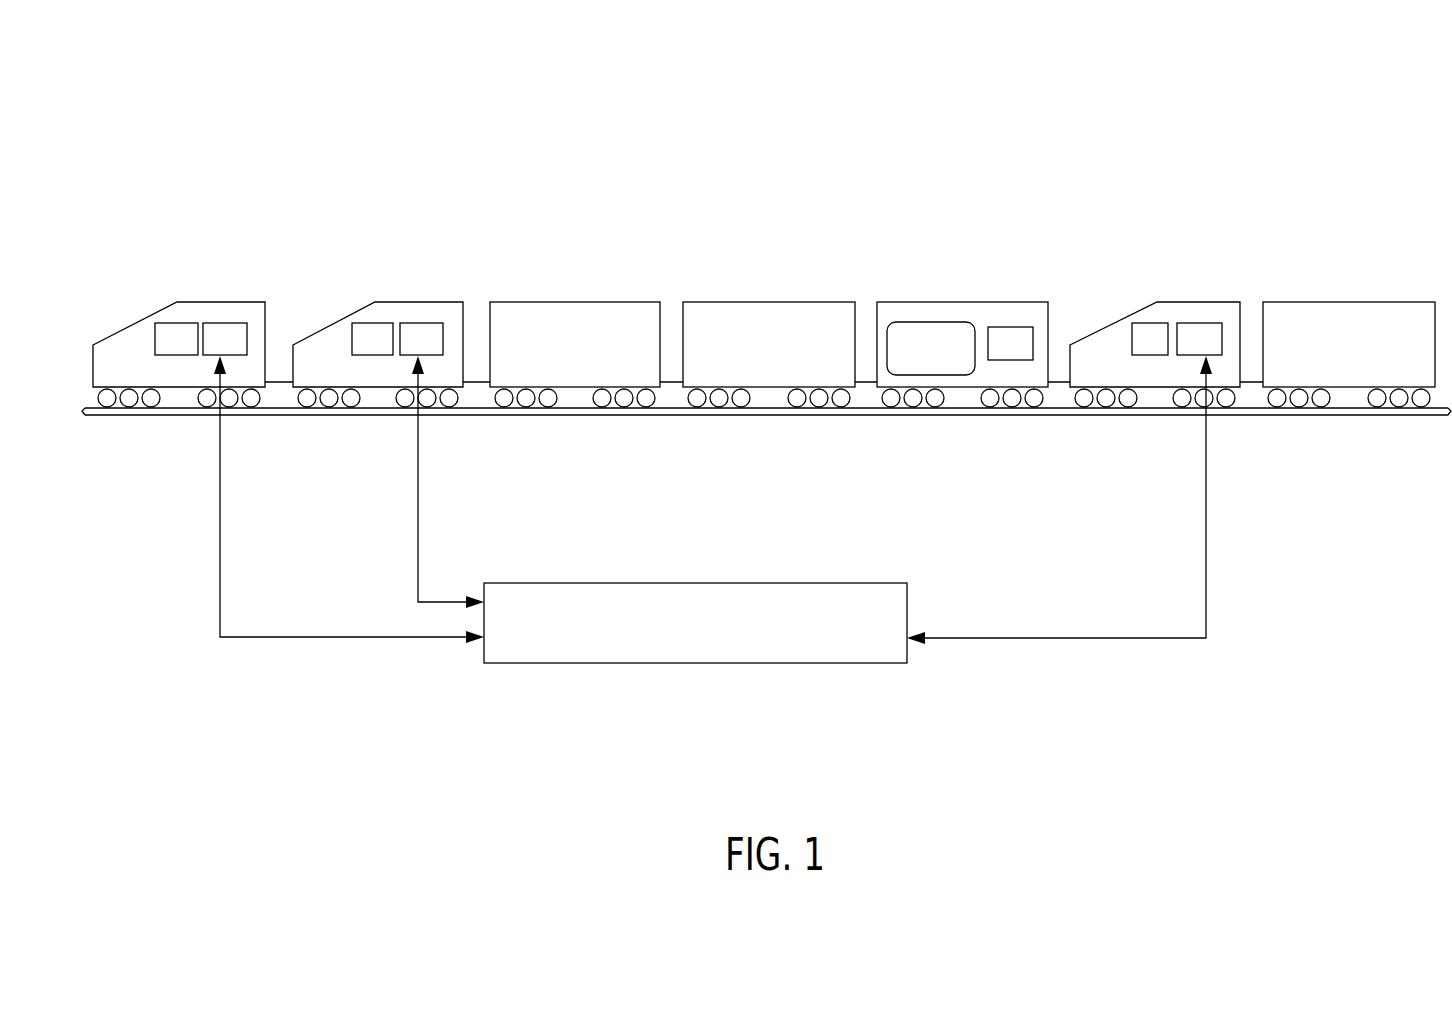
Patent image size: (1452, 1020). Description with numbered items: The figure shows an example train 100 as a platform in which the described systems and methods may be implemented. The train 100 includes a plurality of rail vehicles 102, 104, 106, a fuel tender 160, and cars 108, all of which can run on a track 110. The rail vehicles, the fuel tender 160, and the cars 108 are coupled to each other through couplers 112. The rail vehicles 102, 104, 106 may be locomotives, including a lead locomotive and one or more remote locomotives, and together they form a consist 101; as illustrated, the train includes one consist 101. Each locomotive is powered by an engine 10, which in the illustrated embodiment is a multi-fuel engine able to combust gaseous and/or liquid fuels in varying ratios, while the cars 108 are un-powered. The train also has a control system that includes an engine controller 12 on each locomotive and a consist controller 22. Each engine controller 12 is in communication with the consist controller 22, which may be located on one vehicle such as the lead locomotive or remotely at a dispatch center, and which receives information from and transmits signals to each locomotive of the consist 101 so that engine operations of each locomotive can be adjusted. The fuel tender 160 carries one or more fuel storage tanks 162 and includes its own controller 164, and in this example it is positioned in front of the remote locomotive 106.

The train 100 is at (1208, 97).
The consist 101 is at (281, 246).
The rail vehicle 102 is at (203, 302).
The rail vehicle 104 is at (400, 302).
The remote locomotive 106 is at (1168, 298).
The car 108 is at (962, 337).
The track 110 is at (1380, 418).
The coupler 112 is at (277, 384).
The fuel tender 160 is at (940, 302).
The fuel storage tank 162 is at (931, 348).
The controller 164 is at (1010, 343).
The engine 10 is at (661, 339).
The engine controller 12 is at (712, 483).
The consist controller 22 is at (695, 623).